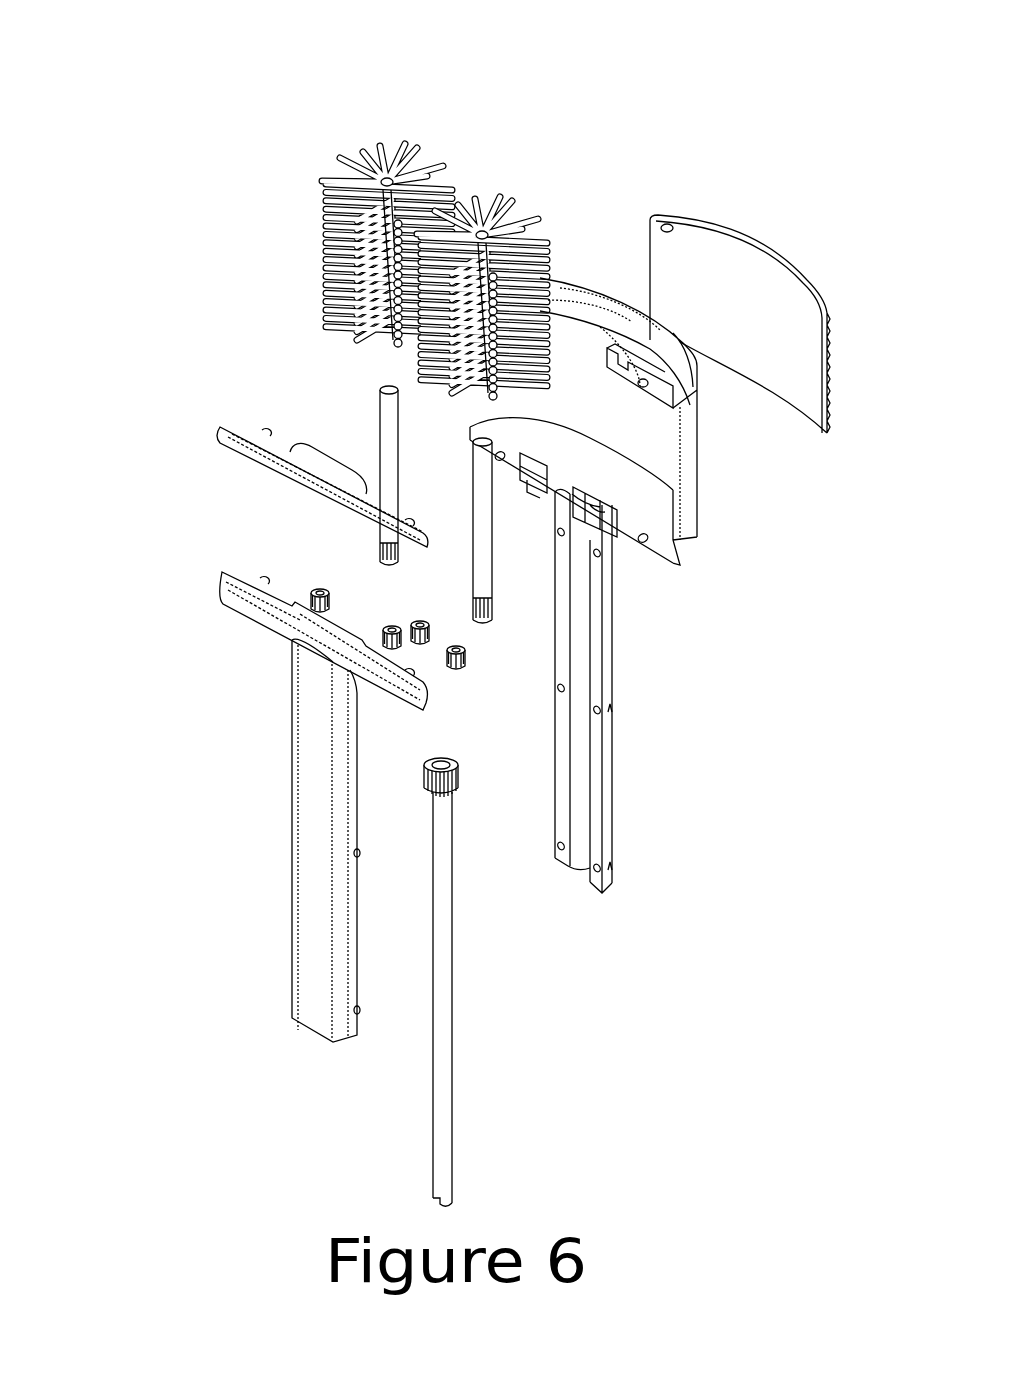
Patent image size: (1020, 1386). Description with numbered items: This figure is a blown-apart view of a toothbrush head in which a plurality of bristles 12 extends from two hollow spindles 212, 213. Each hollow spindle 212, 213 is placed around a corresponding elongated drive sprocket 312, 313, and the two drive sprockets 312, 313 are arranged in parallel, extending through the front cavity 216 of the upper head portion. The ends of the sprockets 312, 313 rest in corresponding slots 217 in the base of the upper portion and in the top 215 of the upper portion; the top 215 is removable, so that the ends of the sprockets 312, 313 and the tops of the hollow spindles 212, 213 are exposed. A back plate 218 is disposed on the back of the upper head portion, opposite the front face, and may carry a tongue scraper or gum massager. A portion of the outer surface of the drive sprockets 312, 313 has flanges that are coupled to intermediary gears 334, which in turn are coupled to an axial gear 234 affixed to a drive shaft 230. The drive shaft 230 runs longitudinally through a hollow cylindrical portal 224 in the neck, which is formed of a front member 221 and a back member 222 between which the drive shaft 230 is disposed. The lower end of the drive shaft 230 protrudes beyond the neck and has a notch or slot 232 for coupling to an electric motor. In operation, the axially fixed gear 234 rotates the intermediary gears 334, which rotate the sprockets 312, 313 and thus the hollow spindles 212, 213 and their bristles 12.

The plurality of bristles 12 is at (383, 213).
The hollow spindle 212 is at (388, 180).
The hollow spindle 213 is at (483, 233).
The top of the upper portion 215 is at (591, 312).
The front cavity 216 is at (644, 507).
The slot 217 is at (606, 532).
The back plate 218 is at (748, 238).
The front member 221 is at (296, 856).
The back member 222 is at (612, 820).
The hollow cylindrical portal 224 is at (583, 752).
The drive shaft 230 is at (437, 982).
The notch or slot 232 is at (434, 1199).
The axial gear 234 is at (455, 790).
The drive sprocket 312 is at (379, 389).
The drive sprocket 313 is at (487, 620).
The intermediary gear 334 is at (427, 613).